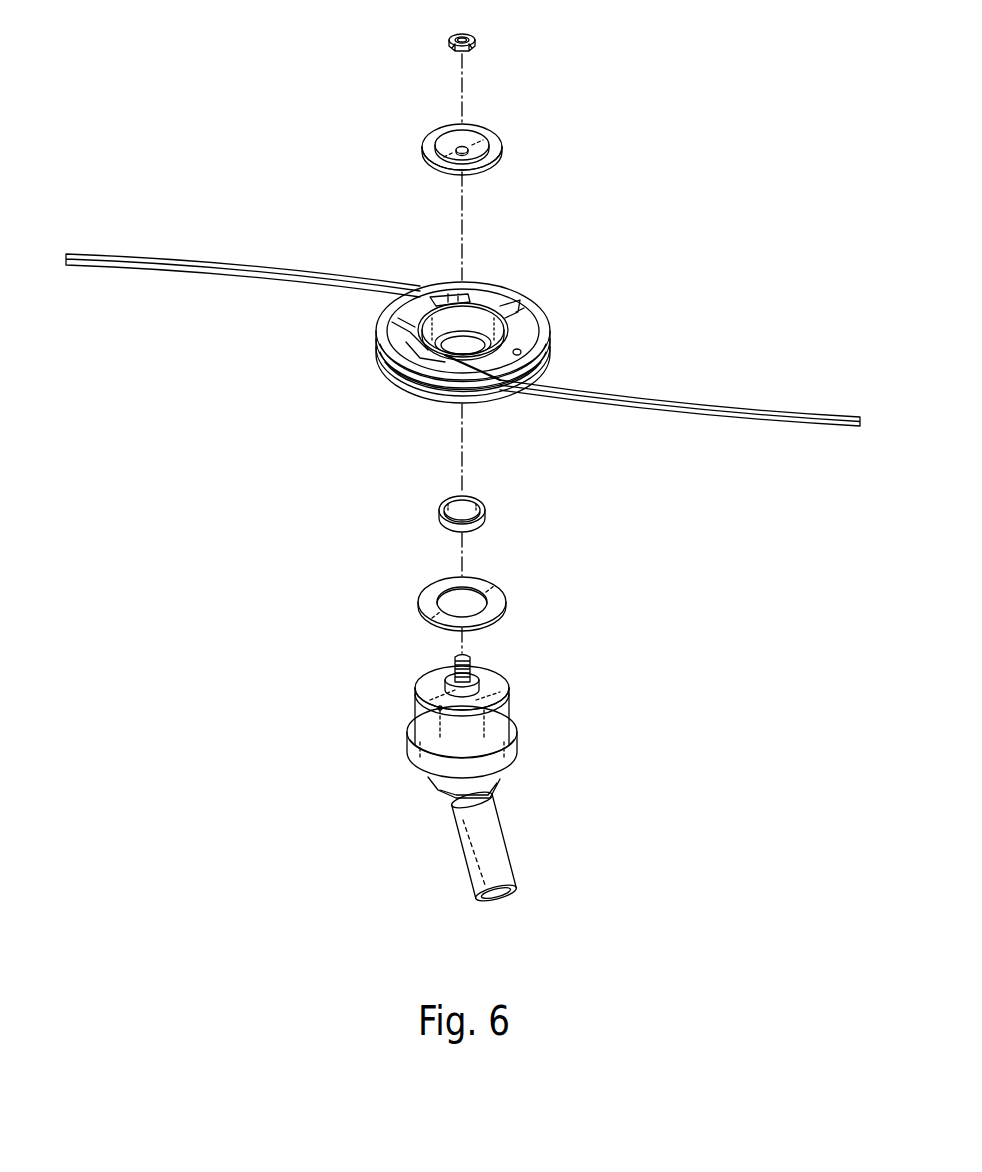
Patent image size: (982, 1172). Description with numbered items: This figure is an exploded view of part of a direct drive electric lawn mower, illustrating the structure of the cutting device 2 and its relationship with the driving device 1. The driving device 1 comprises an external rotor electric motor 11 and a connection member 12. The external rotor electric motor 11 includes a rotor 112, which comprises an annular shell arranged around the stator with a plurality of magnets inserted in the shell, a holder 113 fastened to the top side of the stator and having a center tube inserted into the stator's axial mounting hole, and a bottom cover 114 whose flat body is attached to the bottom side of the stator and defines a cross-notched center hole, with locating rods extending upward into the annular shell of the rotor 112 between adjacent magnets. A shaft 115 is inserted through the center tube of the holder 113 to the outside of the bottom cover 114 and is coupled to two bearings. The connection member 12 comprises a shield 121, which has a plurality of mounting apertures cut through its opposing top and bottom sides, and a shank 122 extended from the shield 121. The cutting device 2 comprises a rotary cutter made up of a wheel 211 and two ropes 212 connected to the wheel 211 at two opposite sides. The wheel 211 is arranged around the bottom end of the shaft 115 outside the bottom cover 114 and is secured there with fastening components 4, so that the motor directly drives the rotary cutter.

The driving device 1 is at (481, 756).
The external rotor electric motor 11 is at (461, 693).
The rotor 112 is at (505, 727).
The holder 113 is at (412, 751).
The bottom cover 114 is at (435, 690).
The shaft 115 is at (470, 672).
The connection member 12 is at (455, 840).
The shield 121 is at (427, 789).
The shank 122 is at (493, 826).
The cutting device 2 is at (463, 363).
The wheel 211 is at (418, 397).
The ropes 212 is at (278, 277).
The fastening components 4 is at (478, 40).